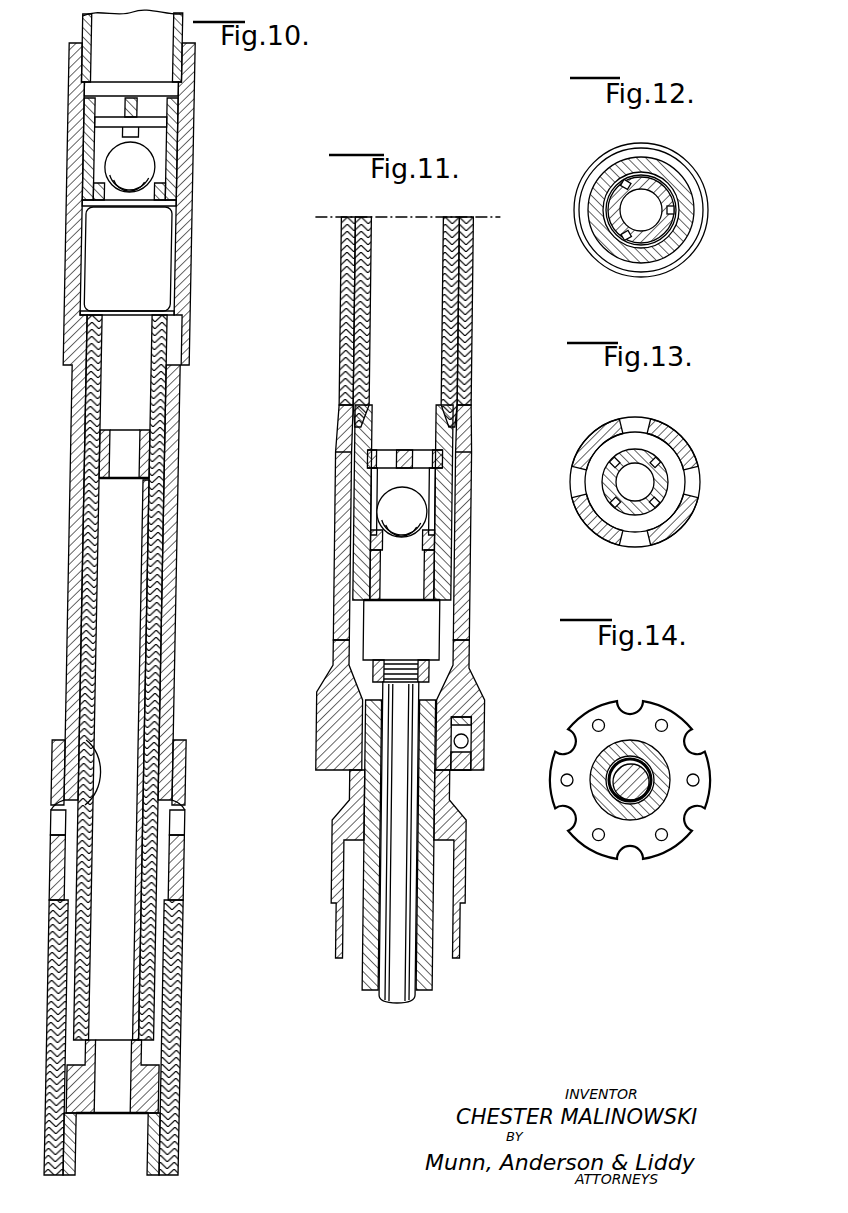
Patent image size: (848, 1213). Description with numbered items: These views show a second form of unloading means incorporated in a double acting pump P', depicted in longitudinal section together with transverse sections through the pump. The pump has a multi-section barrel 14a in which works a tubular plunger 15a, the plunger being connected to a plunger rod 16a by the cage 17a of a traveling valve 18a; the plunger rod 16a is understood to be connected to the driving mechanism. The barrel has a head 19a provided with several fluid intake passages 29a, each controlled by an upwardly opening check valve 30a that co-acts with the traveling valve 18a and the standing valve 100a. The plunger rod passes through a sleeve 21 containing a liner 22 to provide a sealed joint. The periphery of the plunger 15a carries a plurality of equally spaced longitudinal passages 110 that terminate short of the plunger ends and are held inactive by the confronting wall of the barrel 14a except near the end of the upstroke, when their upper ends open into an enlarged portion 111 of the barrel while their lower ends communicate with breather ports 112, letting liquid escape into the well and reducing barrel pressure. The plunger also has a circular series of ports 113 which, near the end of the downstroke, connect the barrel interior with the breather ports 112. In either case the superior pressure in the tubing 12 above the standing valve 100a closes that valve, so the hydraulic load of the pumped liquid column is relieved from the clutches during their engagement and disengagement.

In FIG. 10, the tubing 12 is at (83, 24).
In FIG. 10, the multi-section barrel 14a is at (196, 306).
In FIG. 11, the multi-section barrel 14a is at (477, 354).
In FIG. 12, the multi-section barrel 14a is at (694, 258).
In FIG. 13, the multi-section barrel 14a is at (680, 530).
In FIG. 10, the tubular plunger 15a is at (102, 657).
In FIG. 11, the tubular plunger 15a is at (372, 362).
In FIG. 12, the tubular plunger 15a is at (598, 221).
In FIG. 11, the plunger rod 16a is at (408, 1005).
In FIG. 14, the plunger rod 16a is at (651, 780).
In FIG. 11, the cage 17a is at (440, 644).
In FIG. 11, the traveling valve 18a is at (420, 509).
In FIG. 11, the head 19a is at (478, 698).
In FIG. 14, the head 19a is at (680, 725).
In FIG. 11, the sleeve 21 is at (466, 925).
In FIG. 11, the liner 22 is at (437, 954).
In FIG. 11, the fluid intake passages 29a is at (480, 762).
In FIG. 11, the check valve 30a is at (478, 743).
In FIG. 10, the standing valve 100a is at (149, 168).
In FIG. 10, the longitudinal passages 110 is at (158, 627).
In FIG. 12, the longitudinal passages 110 is at (620, 178).
In FIG. 13, the longitudinal passages 110 is at (617, 457).
In FIG. 10, the enlarged portion 111 is at (153, 256).
In FIG. 10, the breather ports 112 is at (70, 827).
In FIG. 13, the breather ports 112 is at (695, 484).
In FIG. 10, the ports 113 is at (94, 745).
In FIG. 13, the ports 113 is at (656, 459).
In FIG. 10, the double acting pump P is at (180, 452).
In FIG. 11, the double acting pump P is at (477, 536).